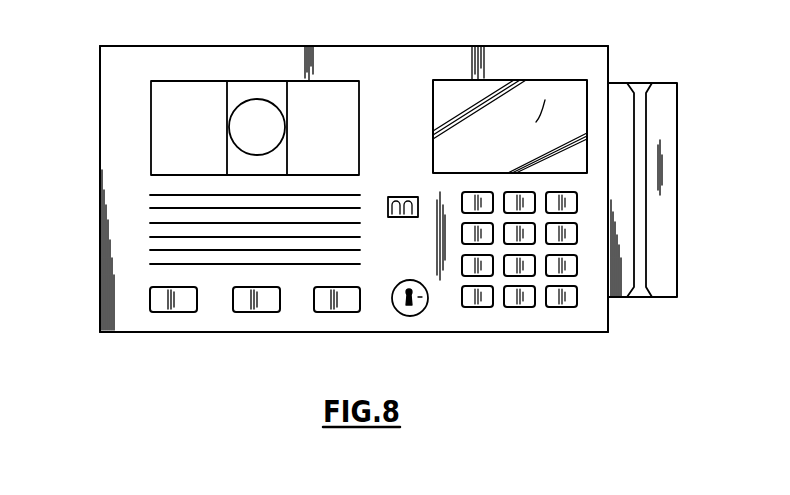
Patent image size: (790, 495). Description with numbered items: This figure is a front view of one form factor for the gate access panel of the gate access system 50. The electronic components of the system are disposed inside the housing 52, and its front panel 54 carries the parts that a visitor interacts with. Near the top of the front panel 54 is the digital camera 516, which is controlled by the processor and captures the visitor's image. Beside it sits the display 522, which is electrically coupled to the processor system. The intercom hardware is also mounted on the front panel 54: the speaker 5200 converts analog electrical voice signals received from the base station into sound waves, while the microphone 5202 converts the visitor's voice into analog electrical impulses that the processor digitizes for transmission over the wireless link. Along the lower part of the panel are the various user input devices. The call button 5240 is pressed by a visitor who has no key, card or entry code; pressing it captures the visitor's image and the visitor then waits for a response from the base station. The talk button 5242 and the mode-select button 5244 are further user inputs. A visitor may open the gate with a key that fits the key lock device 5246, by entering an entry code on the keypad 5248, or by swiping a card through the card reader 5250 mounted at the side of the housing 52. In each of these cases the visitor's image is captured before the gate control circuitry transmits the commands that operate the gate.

The gate access system 50 is at (659, 55).
The housing 52 is at (500, 46).
The front panel 54 is at (116, 128).
The digital camera 516 is at (255, 108).
The display 522 is at (450, 152).
The speaker 5200 is at (150, 228).
The microphone 5202 is at (392, 197).
The call button 5240 is at (167, 303).
The talk button 5242 is at (250, 303).
The mode-select button 5244 is at (330, 303).
The key lock device 5246 is at (425, 298).
The keypad 5248 is at (532, 298).
The card reader 5250 is at (665, 273).